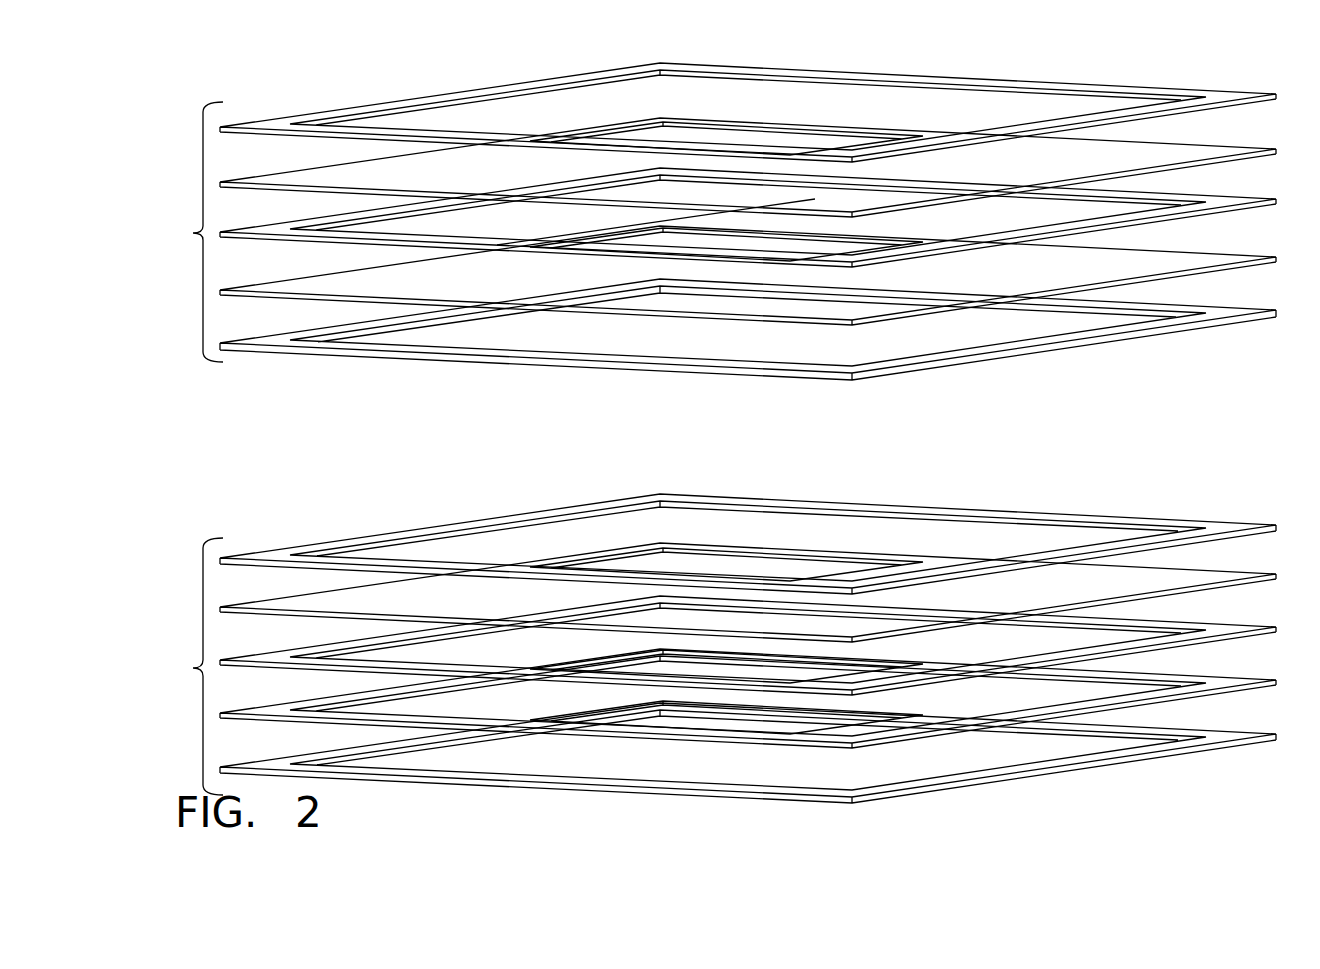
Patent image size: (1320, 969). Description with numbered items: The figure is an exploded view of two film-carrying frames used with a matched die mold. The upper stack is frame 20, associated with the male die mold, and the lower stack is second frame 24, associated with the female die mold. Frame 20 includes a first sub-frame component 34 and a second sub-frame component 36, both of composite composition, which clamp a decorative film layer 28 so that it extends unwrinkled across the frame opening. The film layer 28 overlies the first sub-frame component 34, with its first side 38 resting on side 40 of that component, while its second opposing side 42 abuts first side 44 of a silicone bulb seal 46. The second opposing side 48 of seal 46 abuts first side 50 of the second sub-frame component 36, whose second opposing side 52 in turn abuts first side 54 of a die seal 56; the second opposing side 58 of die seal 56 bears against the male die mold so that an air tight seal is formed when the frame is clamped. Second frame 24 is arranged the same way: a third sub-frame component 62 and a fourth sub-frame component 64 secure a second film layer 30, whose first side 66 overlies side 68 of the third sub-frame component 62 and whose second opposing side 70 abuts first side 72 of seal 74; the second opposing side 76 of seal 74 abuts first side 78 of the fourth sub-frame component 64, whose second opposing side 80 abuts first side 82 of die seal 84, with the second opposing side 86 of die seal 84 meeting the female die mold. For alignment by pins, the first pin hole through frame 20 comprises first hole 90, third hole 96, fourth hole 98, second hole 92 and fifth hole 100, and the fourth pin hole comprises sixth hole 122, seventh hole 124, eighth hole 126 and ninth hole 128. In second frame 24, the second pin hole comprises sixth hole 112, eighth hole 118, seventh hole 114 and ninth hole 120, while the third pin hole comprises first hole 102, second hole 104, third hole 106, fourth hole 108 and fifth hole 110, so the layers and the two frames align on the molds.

The frame 20 is at (187, 232).
The second frame 24 is at (187, 666).
The film layer 28 is at (751, 283).
The second film layer 30 is at (748, 575).
The first sub-frame component 34 is at (753, 338).
The second sub-frame component 36 is at (754, 170).
The first side 38 is at (751, 284).
The side 40 is at (748, 331).
The second opposing side 42 is at (751, 283).
The first side 44 is at (748, 227).
The seal 46 is at (748, 227).
The second opposing side 48 is at (748, 227).
The first side 50 is at (748, 170).
The second opposing side 52 is at (748, 170).
The first side 54 is at (748, 170).
The die seal 56 is at (748, 101).
The second opposing side 58 is at (748, 102).
The third sub-frame component 62 is at (748, 526).
The fourth sub-frame component 64 is at (741, 728).
The first side 66 is at (748, 580).
The side 68 is at (748, 580).
The second opposing side 70 is at (748, 650).
The first side 72 is at (748, 650).
The seal 74 is at (748, 647).
The second opposing side 76 is at (748, 653).
The first side 78 is at (741, 713).
The second opposing side 80 is at (748, 713).
The first side 82 is at (748, 767).
The die seal 84 is at (748, 767).
The second opposing side 86 is at (748, 763).
The first hole 90 is at (790, 370).
The second hole 92 is at (790, 206).
The third hole 96 is at (790, 313).
The fourth hole 98 is at (790, 258).
The fifth hole 100 is at (790, 155).
The first hole 102 is at (790, 583).
The second hole 104 is at (790, 637).
The third hole 106 is at (787, 684).
The fourth hole 108 is at (787, 737).
The fifth hole 110 is at (787, 793).
The sixth hole 112 is at (748, 532).
The seventh hole 114 is at (748, 653).
The eighth hole 118 is at (748, 580).
The ninth hole 120 is at (748, 709).
The sixth hole 122 is at (748, 227).
The seventh hole 124 is at (748, 227).
The eighth hole 126 is at (748, 152).
The ninth hole 128 is at (748, 102).